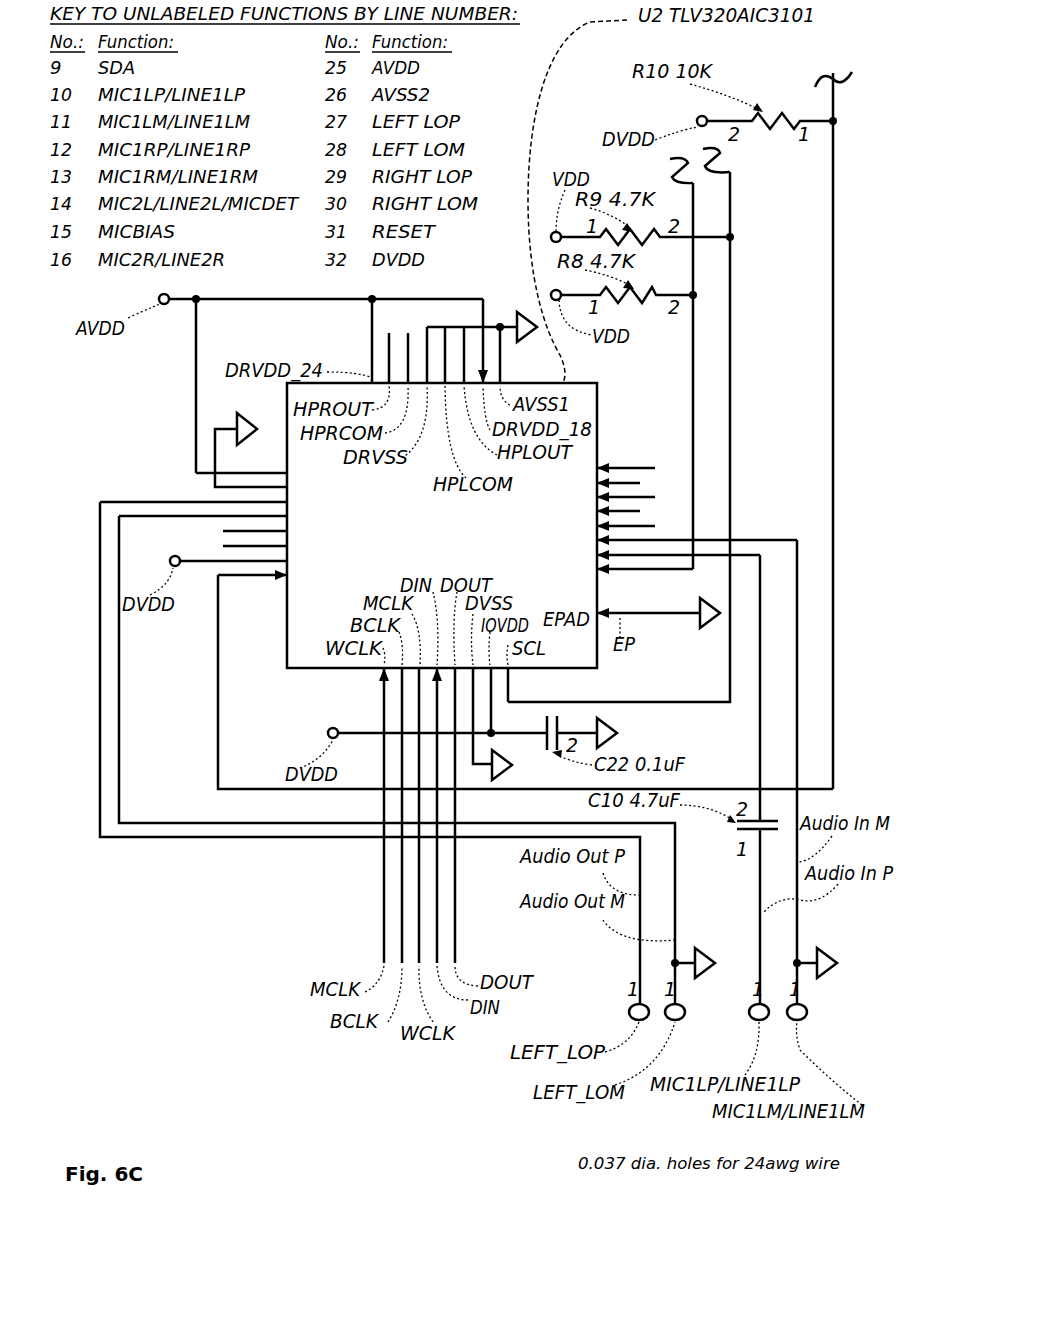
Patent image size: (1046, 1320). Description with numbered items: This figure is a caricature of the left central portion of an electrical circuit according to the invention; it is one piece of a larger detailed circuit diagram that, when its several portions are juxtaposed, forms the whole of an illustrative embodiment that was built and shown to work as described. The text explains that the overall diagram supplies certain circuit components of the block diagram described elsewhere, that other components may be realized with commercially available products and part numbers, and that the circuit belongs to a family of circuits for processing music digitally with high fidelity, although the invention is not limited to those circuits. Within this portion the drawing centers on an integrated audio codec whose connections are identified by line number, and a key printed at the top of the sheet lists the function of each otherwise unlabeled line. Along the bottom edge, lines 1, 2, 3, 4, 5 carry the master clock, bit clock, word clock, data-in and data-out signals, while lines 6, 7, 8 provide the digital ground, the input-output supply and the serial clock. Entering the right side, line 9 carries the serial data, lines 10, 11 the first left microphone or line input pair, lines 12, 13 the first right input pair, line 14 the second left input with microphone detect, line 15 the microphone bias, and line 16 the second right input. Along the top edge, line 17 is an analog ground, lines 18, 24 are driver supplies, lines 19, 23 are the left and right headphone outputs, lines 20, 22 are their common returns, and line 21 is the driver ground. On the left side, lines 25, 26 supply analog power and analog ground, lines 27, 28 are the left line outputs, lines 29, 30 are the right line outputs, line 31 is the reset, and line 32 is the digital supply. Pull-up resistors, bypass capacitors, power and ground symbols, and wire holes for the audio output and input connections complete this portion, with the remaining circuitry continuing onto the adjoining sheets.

The MCLK pin 1 is at (384, 672).
The BCLK pin 2 is at (402, 676).
The WCLK pin 3 is at (419, 682).
The DIN pin 4 is at (437, 692).
The DOUT pin 5 is at (455, 702).
The DVSS pin 6 is at (509, 676).
The IOVDD pin 7 is at (494, 686).
The SCL pin 8 is at (476, 696).
The SDA 9 is at (613, 573).
The MIC1LP/LINE1LP 10 is at (637, 559).
The MIC1LM/LINE1LM 11 is at (662, 544).
The MIC1RP/LINE1RP 12 is at (638, 526).
The MIC1RM/LINE1RM 13 is at (626, 511).
The MIC2L/LINE2L/MICDET 14 is at (638, 497).
The MICBIAS 15 is at (626, 483).
The MIC2R/LINE2R 16 is at (638, 468).
The AVSS1 pin 17 is at (499, 368).
The DRVDD_18 pin 18 is at (486, 364).
The HPLOUT pin 19 is at (464, 325).
The circuit component 20 is at (445, 325).
The DRVSS pin 21 is at (427, 325).
The HPRCOM pin 22 is at (397, 345).
The HPROUT pin 23 is at (389, 350).
The DRVDD_24 pin 24 is at (372, 355).
The AVDD 25 is at (262, 472).
The AVSS2 26 is at (243, 486).
The LEFT LOP 27 is at (172, 501).
The LEFT LOM 28 is at (141, 515).
The RIGHT LOP 29 is at (243, 530).
The circuit component 30 is at (243, 545).
The RESET 31 is at (258, 578).
The DVDD 32 is at (205, 564).